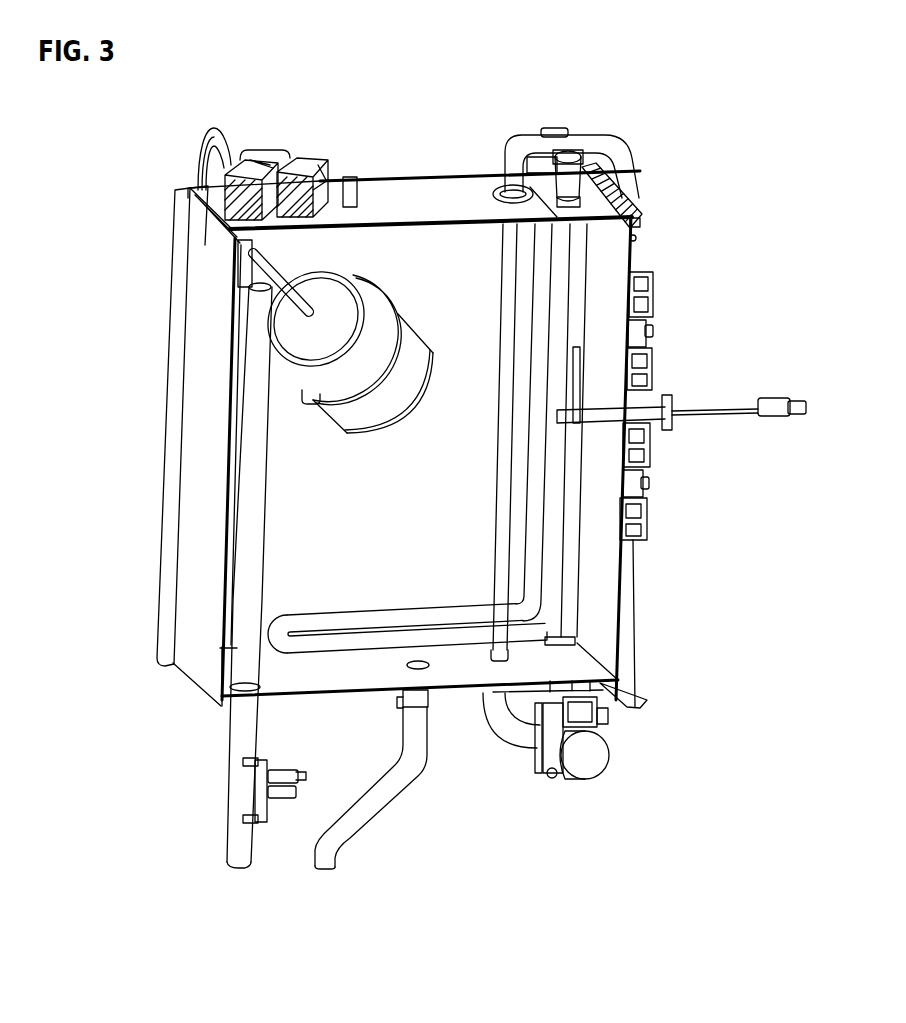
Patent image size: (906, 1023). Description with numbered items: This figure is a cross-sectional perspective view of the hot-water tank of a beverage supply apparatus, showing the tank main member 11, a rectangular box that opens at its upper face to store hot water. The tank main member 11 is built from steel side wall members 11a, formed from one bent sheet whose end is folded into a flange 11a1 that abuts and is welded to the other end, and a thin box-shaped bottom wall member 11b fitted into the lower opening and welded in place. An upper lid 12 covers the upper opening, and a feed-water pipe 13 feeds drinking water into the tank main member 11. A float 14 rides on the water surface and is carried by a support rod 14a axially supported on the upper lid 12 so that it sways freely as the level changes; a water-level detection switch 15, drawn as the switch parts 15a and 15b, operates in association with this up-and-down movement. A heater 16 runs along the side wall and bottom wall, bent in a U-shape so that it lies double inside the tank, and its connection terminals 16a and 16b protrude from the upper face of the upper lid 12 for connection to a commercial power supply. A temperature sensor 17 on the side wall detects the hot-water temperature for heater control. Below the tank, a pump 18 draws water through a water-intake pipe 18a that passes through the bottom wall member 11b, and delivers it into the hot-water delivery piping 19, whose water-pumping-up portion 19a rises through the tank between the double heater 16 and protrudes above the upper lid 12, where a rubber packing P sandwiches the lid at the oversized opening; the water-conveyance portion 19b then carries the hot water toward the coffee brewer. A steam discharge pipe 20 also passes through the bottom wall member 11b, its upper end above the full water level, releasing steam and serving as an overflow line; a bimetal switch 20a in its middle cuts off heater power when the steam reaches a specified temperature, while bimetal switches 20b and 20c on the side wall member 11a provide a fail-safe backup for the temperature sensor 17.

The tank main member 11 is at (67, 592).
The side wall member 11a is at (200, 623).
The flange 11a1 is at (177, 398).
The bottom wall member 11b is at (285, 678).
The upper lid 12 is at (390, 187).
The feed-water pipe 13 is at (350, 830).
The float 14 is at (343, 410).
The support rod 14a is at (284, 262).
The water-level detection switch 15 is at (210, 92).
The first connector 15a is at (241, 172).
The second connector 15b is at (298, 160).
The heater 16 is at (375, 633).
The connection terminal 16a is at (572, 177).
The connection terminal 16b is at (553, 128).
The temperature sensor 17 is at (677, 397).
The pump 18 is at (603, 755).
The water-intake pipe 18a is at (565, 592).
The hot-water delivery piping 19 is at (566, 382).
The water-pumping-up portion 19a is at (493, 527).
The water-conveyance portion 19b is at (623, 150).
The steam discharge pipe 20 is at (233, 755).
The bimetal switch 20a is at (260, 792).
The bimetal switch 20b is at (653, 328).
The bimetal switch 20c is at (648, 483).
The rubber packing P is at (483, 172).